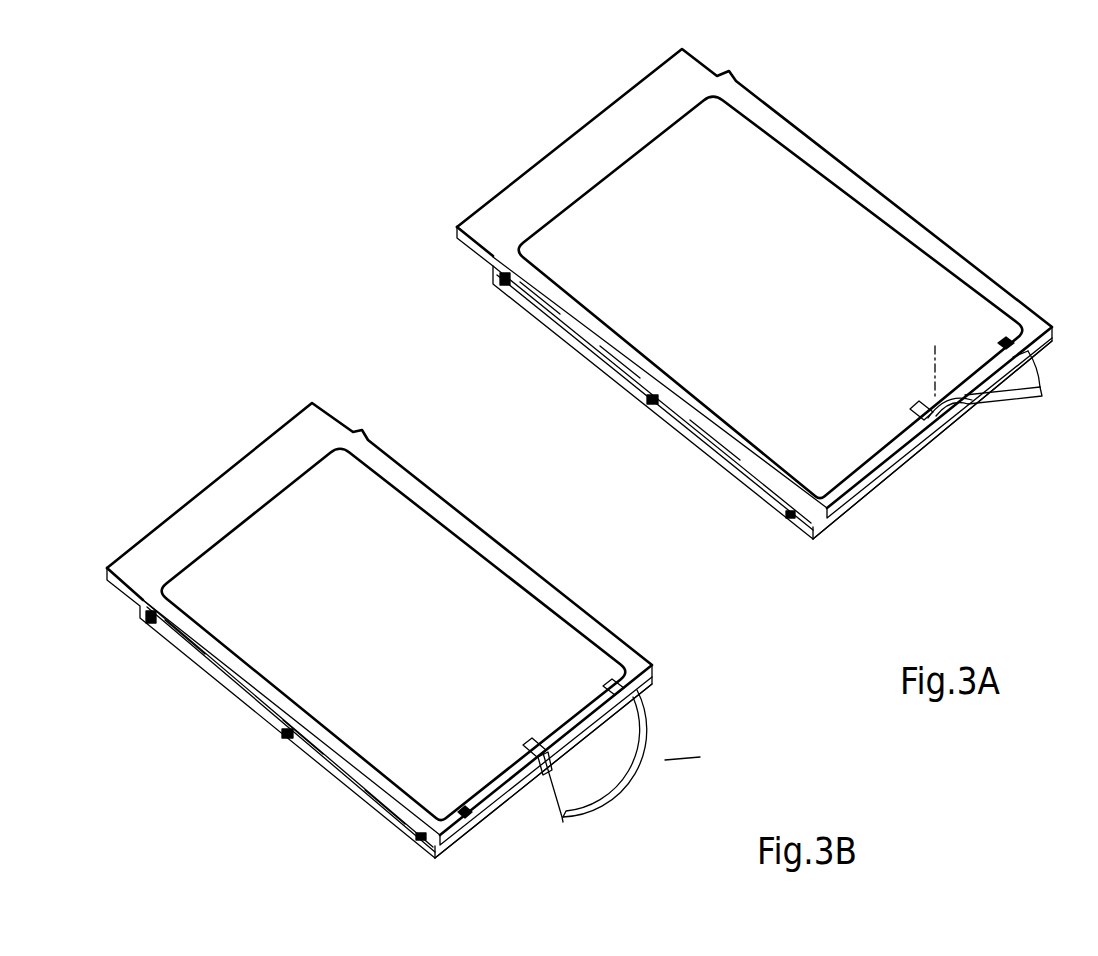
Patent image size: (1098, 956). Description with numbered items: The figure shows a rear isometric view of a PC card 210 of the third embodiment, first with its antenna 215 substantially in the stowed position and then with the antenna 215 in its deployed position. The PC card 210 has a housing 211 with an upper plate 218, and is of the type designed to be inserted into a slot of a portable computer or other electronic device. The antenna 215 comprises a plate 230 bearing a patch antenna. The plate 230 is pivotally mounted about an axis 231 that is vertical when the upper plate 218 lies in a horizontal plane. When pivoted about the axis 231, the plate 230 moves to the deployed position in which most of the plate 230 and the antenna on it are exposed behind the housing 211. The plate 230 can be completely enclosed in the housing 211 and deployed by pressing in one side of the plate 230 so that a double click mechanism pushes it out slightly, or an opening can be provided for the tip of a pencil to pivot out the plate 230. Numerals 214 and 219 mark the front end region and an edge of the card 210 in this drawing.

In FIG. 3A, the PC card 210 is at (791, 68).
In FIG. 3B, the PC card 210 is at (452, 402).
In FIG. 3A, the housing 211 is at (746, 68).
In FIG. 3B, the housing 211 is at (467, 503).
In FIG. 3A, the cover 214 is at (530, 163).
In FIG. 3B, the cover 214 is at (193, 500).
In FIG. 3A, the antenna 215 is at (1034, 402).
In FIG. 3B, the antenna 215 is at (668, 760).
In FIG. 3A, the upper plate 218 is at (843, 212).
In FIG. 3B, the upper plate 218 is at (370, 485).
In FIG. 3A, the base edge with latch tab 219 is at (864, 503).
In FIG. 3B, the base edge with latch tab 219 is at (472, 832).
In FIG. 3B, the plate 230 is at (603, 812).
In FIG. 3A, the axis 231 is at (935, 348).